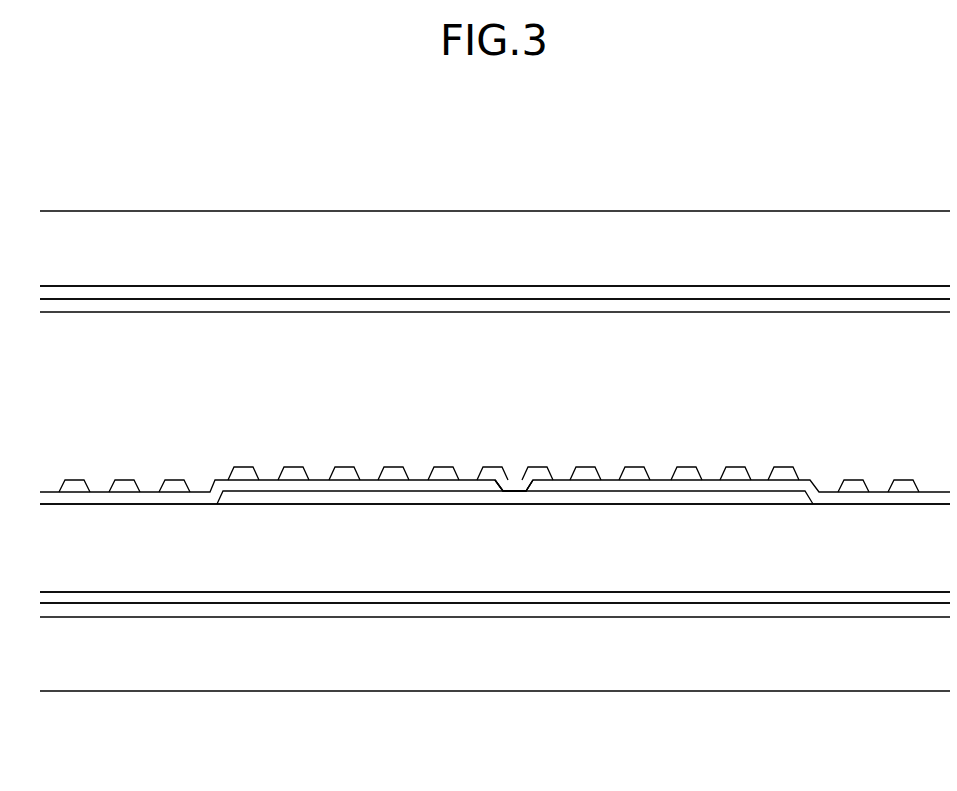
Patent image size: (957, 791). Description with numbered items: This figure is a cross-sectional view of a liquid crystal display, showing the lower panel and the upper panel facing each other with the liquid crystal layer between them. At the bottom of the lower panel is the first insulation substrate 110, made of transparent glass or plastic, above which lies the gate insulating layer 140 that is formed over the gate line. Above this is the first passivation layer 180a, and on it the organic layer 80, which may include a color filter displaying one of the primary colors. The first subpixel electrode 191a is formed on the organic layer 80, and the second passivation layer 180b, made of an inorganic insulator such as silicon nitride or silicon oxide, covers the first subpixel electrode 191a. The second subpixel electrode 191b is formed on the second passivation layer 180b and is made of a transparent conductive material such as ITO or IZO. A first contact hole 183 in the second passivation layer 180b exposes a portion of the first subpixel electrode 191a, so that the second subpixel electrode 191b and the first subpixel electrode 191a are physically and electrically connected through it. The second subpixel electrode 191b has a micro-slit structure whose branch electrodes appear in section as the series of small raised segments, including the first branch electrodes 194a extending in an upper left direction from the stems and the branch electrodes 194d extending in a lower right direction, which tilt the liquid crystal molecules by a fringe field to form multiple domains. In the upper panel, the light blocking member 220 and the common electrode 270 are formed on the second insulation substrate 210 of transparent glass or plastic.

The second insulation substrate 210 is at (345, 232).
The light blocking member 220 is at (473, 292).
The common electrode 270 is at (605, 308).
The first insulation substrate 110 is at (433, 665).
The gate insulating layer 140 is at (527, 610).
The organic layer 80 is at (634, 567).
The first passivation layer 180a is at (776, 597).
The second passivation layer 180b is at (876, 498).
The first subpixel electrode 191a is at (757, 497).
The second subpixel electrode 191b is at (537, 477).
The first contact hole 183 is at (507, 478).
The first branch electrodes 194a is at (123, 485).
The branch electrodes 194d is at (632, 478).